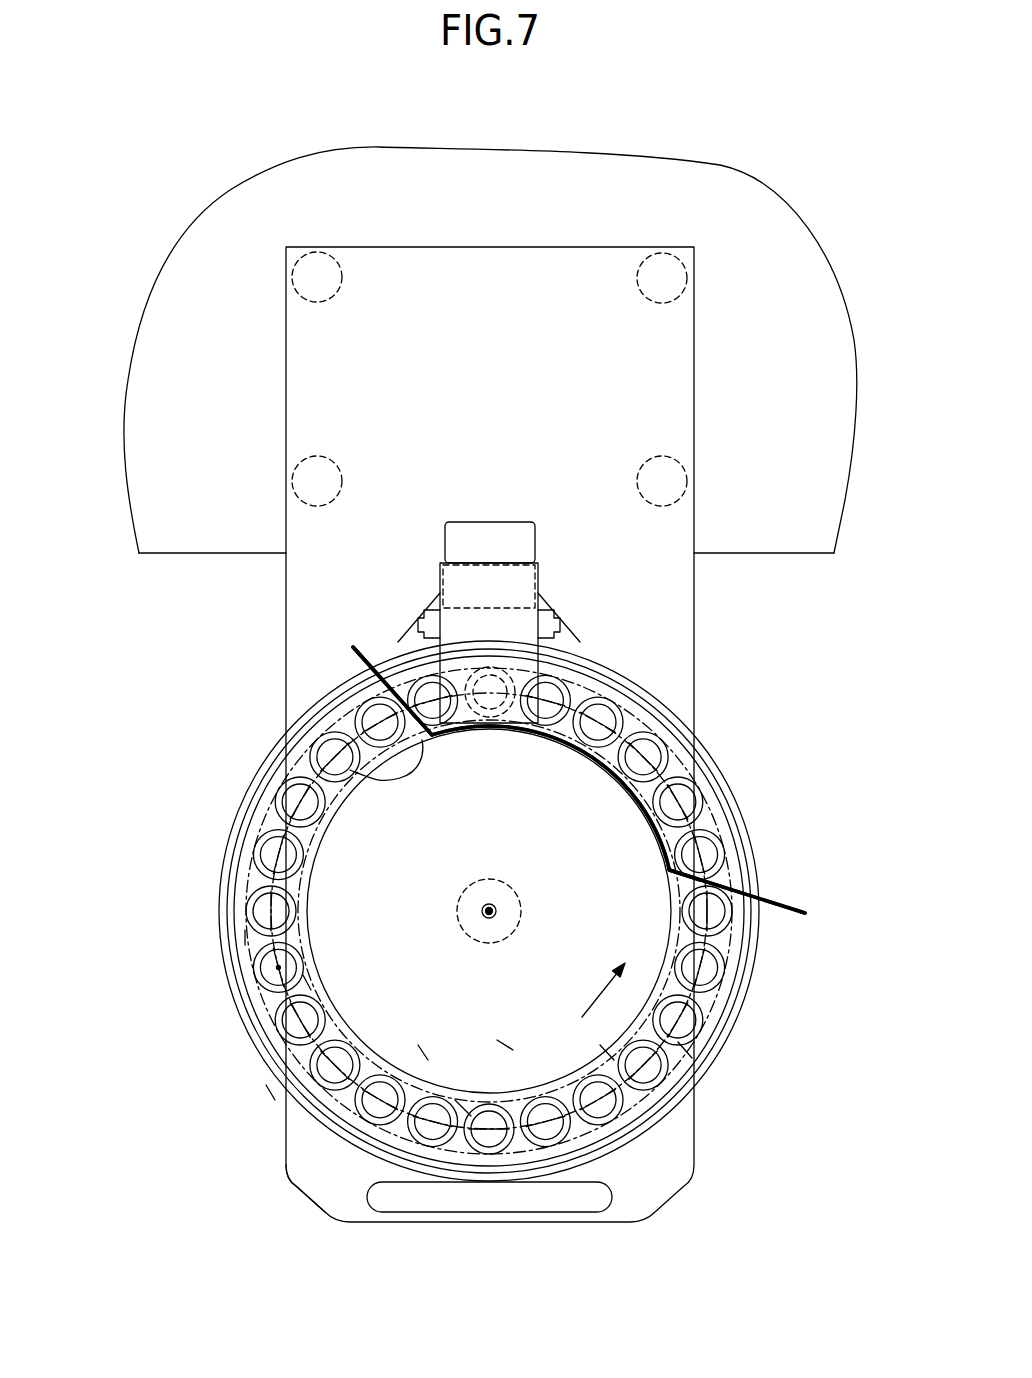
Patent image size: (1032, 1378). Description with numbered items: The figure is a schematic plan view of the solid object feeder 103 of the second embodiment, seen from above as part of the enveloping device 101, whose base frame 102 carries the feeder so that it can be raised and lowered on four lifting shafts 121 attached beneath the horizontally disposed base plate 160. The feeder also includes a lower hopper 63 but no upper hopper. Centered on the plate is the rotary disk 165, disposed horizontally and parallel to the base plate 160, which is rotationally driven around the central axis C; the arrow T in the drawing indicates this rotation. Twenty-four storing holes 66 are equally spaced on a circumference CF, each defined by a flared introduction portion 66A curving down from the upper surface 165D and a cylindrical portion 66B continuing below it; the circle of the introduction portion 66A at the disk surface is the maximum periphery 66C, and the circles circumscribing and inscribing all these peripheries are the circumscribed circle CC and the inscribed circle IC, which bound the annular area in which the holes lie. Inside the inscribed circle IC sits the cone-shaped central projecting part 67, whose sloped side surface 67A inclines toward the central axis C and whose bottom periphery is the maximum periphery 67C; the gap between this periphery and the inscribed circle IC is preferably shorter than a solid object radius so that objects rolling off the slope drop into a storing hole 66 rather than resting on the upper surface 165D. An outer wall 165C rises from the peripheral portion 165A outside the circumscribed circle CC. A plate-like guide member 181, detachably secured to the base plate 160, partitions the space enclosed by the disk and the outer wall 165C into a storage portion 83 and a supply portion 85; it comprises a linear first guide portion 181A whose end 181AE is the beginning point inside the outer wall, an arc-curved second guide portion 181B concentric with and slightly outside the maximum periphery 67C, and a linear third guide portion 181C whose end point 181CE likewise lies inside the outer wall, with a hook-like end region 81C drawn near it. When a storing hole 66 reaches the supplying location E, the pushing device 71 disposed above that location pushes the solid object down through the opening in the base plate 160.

The manufacturing device (enveloping device) 101 is at (782, 151).
The base frame 102 is at (304, 198).
The solid object feeder 103 is at (305, 1180).
The lifting shaft 121 is at (303, 456).
The base plate 160 is at (290, 1195).
The lower hopper 63 is at (250, 1172).
The pushing device 71 is at (447, 510).
The supplying location E is at (516, 655).
The storage portion 83 is at (252, 878).
The supply portion 85 is at (700, 750).
The central projecting part 67 is at (430, 997).
The side surface 67A is at (423, 1052).
The maximum periphery of the central projecting part 67C is at (685, 1050).
The central axis C is at (495, 905).
The rotation direction T is at (592, 990).
The storing hole 66 is at (710, 800).
The introduction portion 66A is at (707, 1012).
The cylindrical portion 66B is at (690, 1033).
The maximum periphery of the storing hole 66C is at (670, 1067).
The guide member 181 is at (560, 732).
The first guide portion 181A is at (717, 905).
The second guide portion 181B is at (625, 745).
The one end of the first guide portion 181AE is at (718, 905).
The third guide portion 181C is at (437, 648).
The strap second end tip 181CE is at (370, 720).
The hook portion 81C is at (400, 778).
The circumscribed circle of the storing holes CC is at (245, 937).
The circumference CF is at (276, 966).
The inscribed circle of the storing holes IC is at (307, 983).
The rotary disk 165 is at (505, 1047).
The peripheral portion 165A is at (463, 1110).
The outer wall 165C is at (268, 1094).
The upper surface 165D is at (607, 1052).